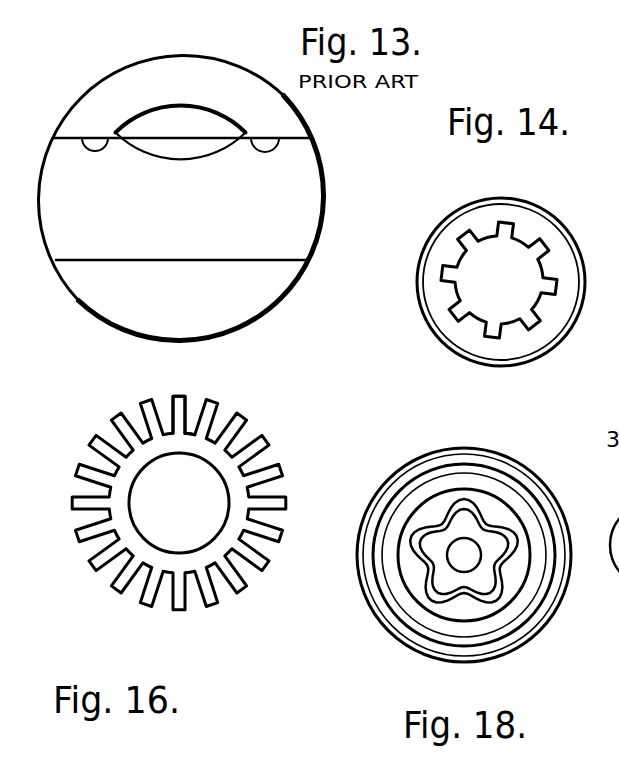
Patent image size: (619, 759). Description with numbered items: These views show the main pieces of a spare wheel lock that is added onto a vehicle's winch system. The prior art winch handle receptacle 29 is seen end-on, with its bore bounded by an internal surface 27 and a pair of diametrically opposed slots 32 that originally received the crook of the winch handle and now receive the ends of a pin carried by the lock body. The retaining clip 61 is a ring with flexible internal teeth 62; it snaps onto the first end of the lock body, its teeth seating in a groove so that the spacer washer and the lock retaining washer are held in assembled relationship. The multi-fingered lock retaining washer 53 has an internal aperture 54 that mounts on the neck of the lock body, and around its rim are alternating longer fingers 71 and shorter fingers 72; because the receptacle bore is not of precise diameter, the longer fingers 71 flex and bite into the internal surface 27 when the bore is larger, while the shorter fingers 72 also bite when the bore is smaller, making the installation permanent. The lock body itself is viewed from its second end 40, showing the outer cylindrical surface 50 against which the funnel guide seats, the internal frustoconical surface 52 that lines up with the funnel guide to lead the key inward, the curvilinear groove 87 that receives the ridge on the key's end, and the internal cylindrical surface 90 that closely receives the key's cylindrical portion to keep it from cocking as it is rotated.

In FIG. 13, the winch handle receptacle 29 is at (100, 78).
In FIG. 13, the internal surface 27 is at (201, 110).
In FIG. 13, the slots 32 is at (100, 150).
In FIG. 14, the retaining clip 61 is at (562, 225).
In FIG. 14, the flexible internal teeth 62 is at (537, 300).
In FIG. 16, the multi-fingered lock retaining washer 53 is at (265, 437).
In FIG. 16, the internal aperture 54 is at (213, 470).
In FIG. 16, the longer fingers 71 is at (148, 403).
In FIG. 16, the shorter fingers 72 is at (191, 401).
In FIG. 18, the cylindrical surface 50 is at (432, 450).
In FIG. 18, the second end 40 is at (538, 478).
In FIG. 18, the internal frustoconical surface 52 is at (423, 618).
In FIG. 18, the curvilinear groove 87 is at (470, 505).
In FIG. 18, the internal cylindrical surface 90 is at (523, 575).